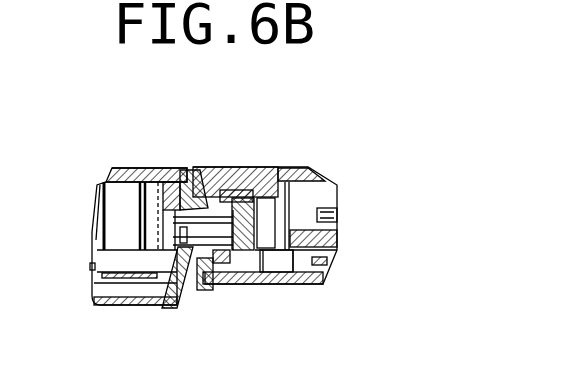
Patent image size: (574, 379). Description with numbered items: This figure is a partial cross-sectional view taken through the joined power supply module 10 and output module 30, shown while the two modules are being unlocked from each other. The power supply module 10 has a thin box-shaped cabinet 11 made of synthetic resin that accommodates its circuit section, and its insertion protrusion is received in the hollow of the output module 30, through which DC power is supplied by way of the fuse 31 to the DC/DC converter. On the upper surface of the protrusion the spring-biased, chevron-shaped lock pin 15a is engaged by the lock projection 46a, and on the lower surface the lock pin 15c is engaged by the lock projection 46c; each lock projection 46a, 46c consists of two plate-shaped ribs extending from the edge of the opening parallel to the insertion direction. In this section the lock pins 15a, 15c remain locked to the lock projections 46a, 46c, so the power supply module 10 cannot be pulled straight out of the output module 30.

The power supply module 10 is at (97, 210).
The cabinet 11 is at (127, 168).
The lock projection 46a is at (202, 172).
The lock projection 46c is at (207, 290).
The lock pin 15a is at (250, 168).
The lock pin 15c is at (227, 290).
The output module 30 is at (309, 170).
The fuse 31 is at (287, 170).